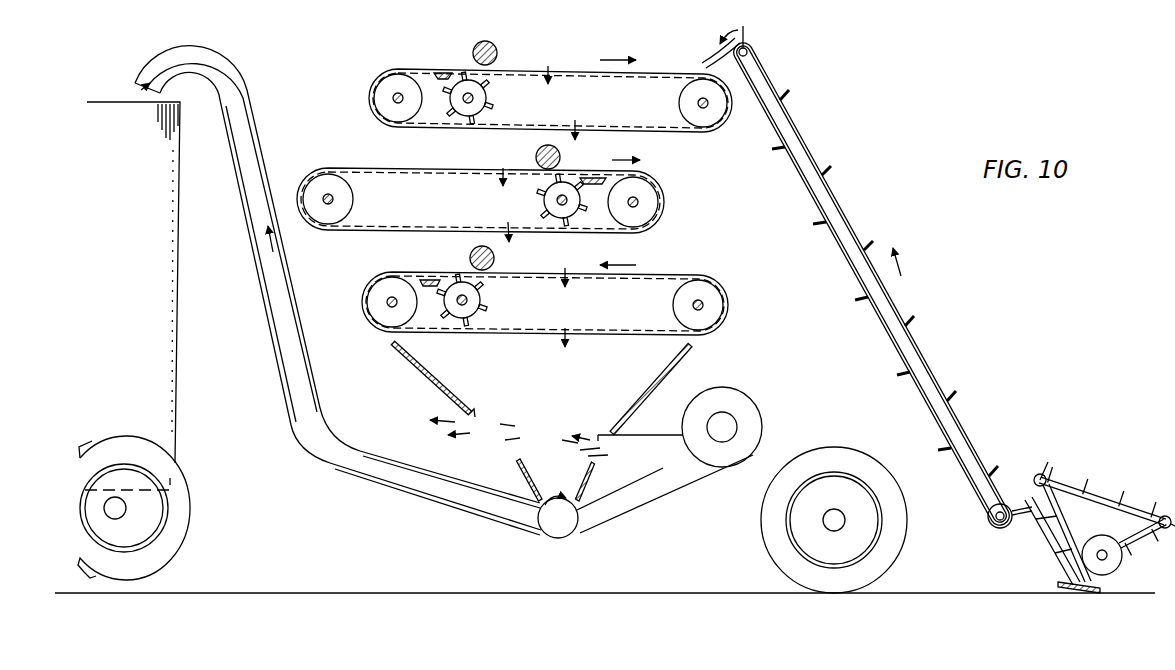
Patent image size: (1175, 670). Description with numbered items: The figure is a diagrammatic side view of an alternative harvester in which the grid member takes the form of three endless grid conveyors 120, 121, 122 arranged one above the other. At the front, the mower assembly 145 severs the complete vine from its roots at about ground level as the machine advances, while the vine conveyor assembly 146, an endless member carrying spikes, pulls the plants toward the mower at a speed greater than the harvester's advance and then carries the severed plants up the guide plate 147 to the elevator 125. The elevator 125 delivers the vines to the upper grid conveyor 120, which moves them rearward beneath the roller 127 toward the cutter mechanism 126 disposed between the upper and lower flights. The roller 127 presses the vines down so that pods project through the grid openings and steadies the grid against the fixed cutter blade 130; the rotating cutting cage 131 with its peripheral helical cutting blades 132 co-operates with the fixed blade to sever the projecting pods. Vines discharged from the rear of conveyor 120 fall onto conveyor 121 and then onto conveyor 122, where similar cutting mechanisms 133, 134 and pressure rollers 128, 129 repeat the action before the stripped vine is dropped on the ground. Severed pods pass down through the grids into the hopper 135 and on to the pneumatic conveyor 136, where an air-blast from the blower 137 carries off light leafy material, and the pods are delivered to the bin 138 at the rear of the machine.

The upper grid conveyor 120 is at (393, 67).
The grid conveyor 121 is at (661, 184).
The grid conveyor 122 is at (728, 277).
The elevator 125 is at (922, 334).
The cutter mechanism 126 is at (494, 101).
The roller 127 is at (498, 50).
The pressure roller 128 is at (562, 162).
The pressure roller 129 is at (471, 259).
The fixed cutter blade 130 is at (440, 80).
The cutting cage 131 is at (452, 117).
The helical cutting blades 132 is at (486, 113).
The cutting mechanism 133 is at (536, 200).
The cutting mechanism 134 is at (491, 310).
The hopper 135 is at (698, 350).
The pneumatic conveyor 136 is at (298, 392).
The blower 137 is at (752, 417).
The bin 138 is at (155, 398).
The mower assembly 145 is at (1060, 584).
The vine conveyor assembly 146 is at (1096, 480).
The guide plate 147 is at (1040, 538).